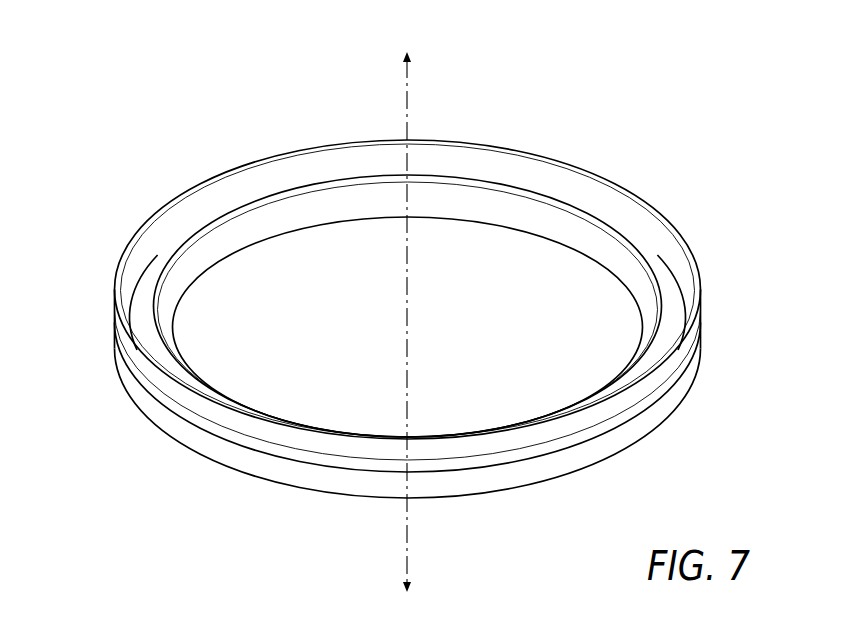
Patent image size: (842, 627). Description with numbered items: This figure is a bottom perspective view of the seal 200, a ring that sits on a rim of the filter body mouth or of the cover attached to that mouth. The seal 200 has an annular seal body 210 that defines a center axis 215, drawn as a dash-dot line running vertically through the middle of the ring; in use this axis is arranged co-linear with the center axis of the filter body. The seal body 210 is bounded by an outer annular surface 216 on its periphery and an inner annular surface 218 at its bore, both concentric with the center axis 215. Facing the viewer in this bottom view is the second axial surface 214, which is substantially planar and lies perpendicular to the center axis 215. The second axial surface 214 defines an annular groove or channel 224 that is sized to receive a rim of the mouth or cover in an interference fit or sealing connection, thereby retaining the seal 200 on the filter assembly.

The seal 200 is at (393, 279).
The annular seal body 210 is at (113, 322).
The second axial surface 214 is at (586, 164).
The center axis 215 is at (410, 78).
The outer annular surface 216 is at (173, 437).
The inner annular surface 218 is at (240, 236).
The annular groove or channel 224 is at (667, 294).